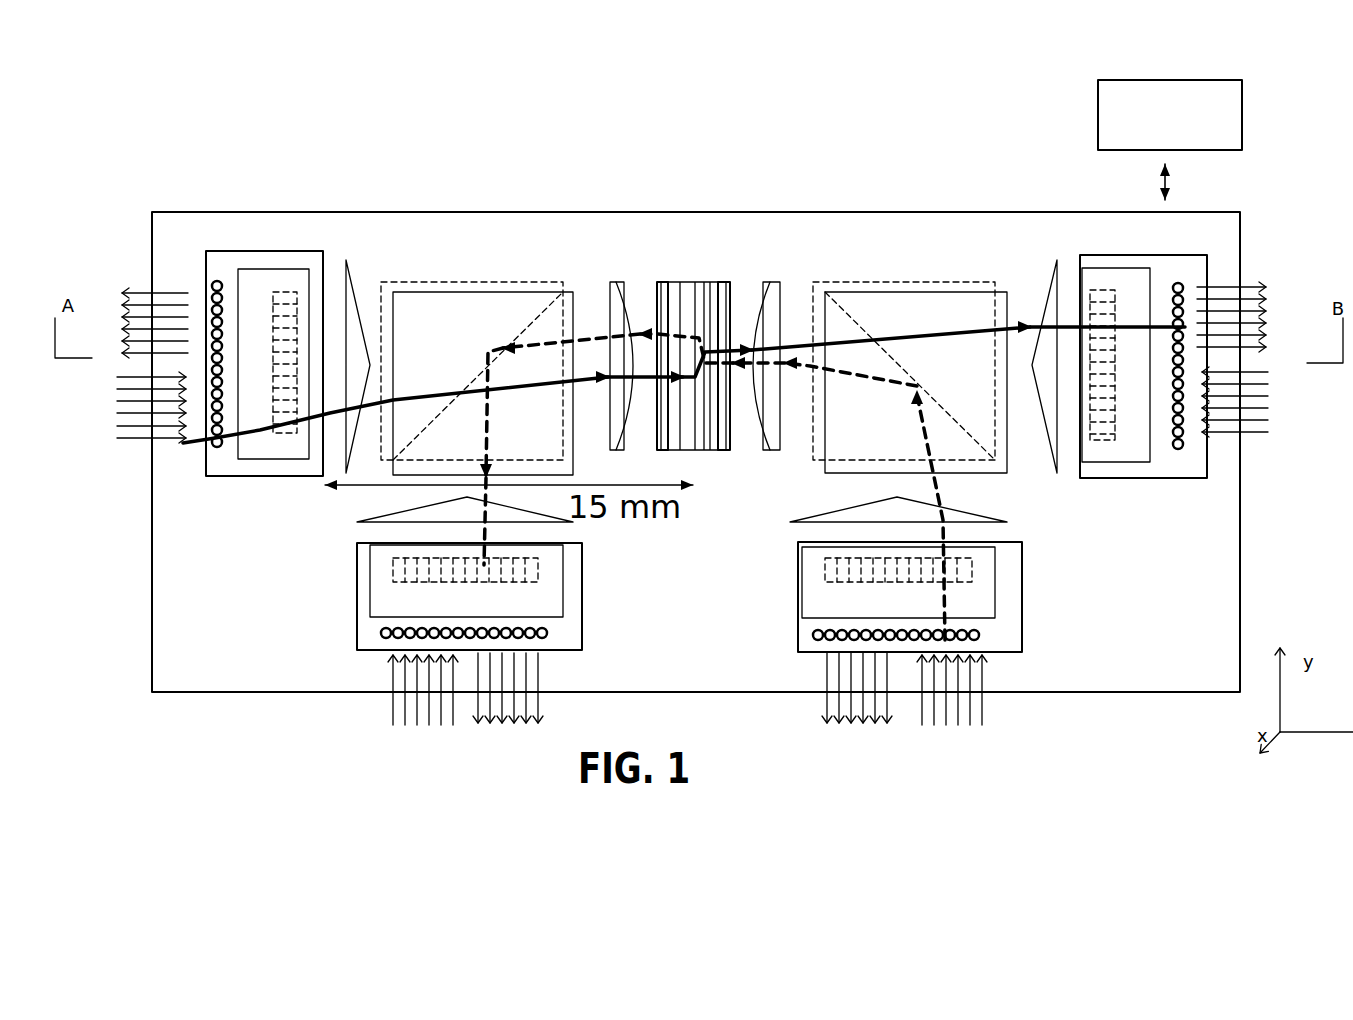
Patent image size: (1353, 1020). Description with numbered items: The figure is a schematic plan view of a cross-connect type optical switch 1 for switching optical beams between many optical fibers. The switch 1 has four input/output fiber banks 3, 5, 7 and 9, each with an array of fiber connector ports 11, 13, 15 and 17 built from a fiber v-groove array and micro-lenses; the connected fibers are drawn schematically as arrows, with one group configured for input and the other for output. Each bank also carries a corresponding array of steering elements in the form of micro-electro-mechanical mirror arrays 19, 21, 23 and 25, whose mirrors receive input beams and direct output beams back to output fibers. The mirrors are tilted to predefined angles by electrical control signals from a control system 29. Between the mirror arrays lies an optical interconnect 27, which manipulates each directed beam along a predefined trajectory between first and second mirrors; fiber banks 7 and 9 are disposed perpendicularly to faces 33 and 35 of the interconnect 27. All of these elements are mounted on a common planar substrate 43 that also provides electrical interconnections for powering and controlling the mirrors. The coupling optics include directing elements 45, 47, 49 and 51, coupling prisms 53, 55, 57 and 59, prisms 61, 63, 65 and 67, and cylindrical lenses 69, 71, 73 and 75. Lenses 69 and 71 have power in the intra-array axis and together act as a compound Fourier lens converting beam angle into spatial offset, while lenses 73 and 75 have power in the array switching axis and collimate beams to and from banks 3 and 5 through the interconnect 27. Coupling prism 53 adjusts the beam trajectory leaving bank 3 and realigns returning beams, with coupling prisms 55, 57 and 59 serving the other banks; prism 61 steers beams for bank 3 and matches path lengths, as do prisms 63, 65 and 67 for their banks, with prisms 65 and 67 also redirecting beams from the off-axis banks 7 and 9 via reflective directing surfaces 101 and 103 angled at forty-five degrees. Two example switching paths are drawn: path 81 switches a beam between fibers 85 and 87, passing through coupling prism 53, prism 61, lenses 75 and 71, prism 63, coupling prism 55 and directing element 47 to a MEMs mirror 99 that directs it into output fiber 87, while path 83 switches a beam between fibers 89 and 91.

The optical switch 1 is at (762, 163).
The fiber bank 3 is at (235, 262).
The fiber bank 5 is at (1187, 473).
The fiber bank 7 is at (580, 597).
The fiber bank 9 is at (1010, 605).
The fiber connector ports 11 is at (213, 452).
The fiber connector ports 13 is at (1190, 288).
The fiber connector ports 15 is at (552, 638).
The fiber connector ports 17 is at (985, 640).
The MEMs array 19 is at (290, 292).
The MEMs array 21 is at (1112, 297).
The MEMs array 23 is at (400, 565).
The MEMs array 25 is at (830, 567).
The optical interconnect 27 is at (698, 332).
The control system 29 is at (1098, 118).
The face of interconnect 33 is at (672, 282).
The face of interconnect 35 is at (726, 282).
The substrate 43 is at (433, 212).
The directing element 45 is at (262, 283).
The directing element 47 is at (1107, 455).
The directing element 49 is at (390, 600).
The directing element 51 is at (825, 600).
The coupling prism 53 is at (350, 262).
The coupling prism 55 is at (287, 440).
The coupling prism 57 is at (428, 515).
The coupling prism 59 is at (830, 513).
The prism 61 is at (565, 292).
The prism 63 is at (1002, 292).
The prism 65 is at (470, 282).
The prism 67 is at (858, 282).
The cylindrical lens 69 is at (622, 445).
The cylindrical lens 71 is at (775, 448).
The cylindrical lens 73 is at (660, 282).
The cylindrical lens 75 is at (734, 293).
The switching path 81 is at (952, 347).
The switching path 83 is at (930, 452).
The optical fiber 85 is at (122, 440).
The optical fiber 87 is at (1245, 320).
The optical fiber 89 is at (945, 720).
The optical fiber 91 is at (475, 720).
The MEMs mirror 99 is at (1110, 330).
The directing surface 101 is at (465, 378).
The directing surface 103 is at (932, 400).